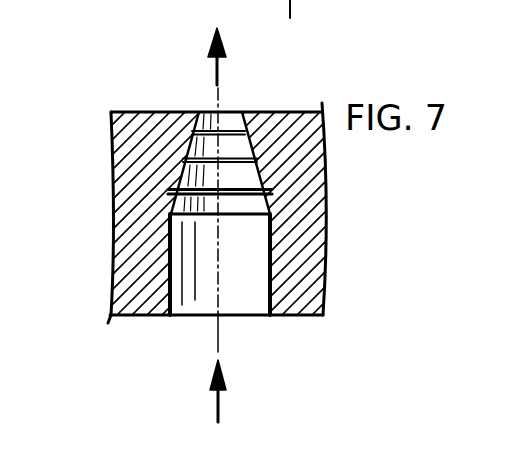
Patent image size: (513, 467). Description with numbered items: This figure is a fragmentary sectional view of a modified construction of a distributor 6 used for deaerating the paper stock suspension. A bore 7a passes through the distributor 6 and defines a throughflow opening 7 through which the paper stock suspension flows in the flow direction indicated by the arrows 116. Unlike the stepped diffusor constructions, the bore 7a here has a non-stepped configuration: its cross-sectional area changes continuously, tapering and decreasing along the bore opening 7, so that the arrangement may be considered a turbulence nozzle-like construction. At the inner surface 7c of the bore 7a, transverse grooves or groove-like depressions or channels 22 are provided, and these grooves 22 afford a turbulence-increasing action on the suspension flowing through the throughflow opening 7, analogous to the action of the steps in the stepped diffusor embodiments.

The distributor 6 is at (295, 168).
The throughflow opening 7 is at (218, 217).
The bore 7a is at (165, 254).
The inner surface 7c is at (253, 111).
The transverse grooves 22 is at (214, 112).
The flow direction 116 is at (213, 67).